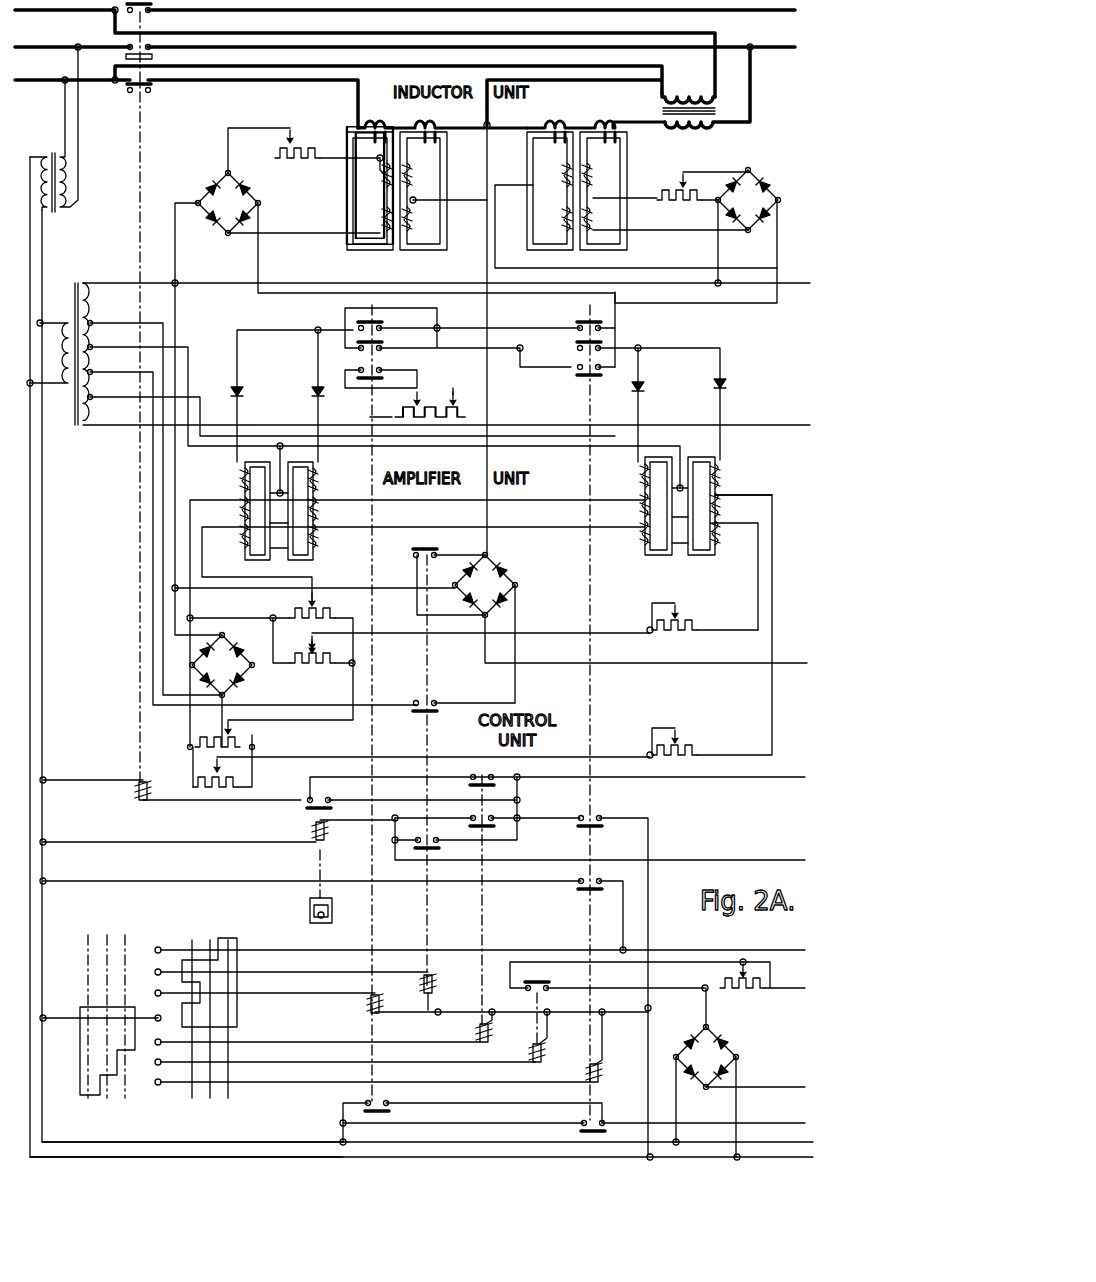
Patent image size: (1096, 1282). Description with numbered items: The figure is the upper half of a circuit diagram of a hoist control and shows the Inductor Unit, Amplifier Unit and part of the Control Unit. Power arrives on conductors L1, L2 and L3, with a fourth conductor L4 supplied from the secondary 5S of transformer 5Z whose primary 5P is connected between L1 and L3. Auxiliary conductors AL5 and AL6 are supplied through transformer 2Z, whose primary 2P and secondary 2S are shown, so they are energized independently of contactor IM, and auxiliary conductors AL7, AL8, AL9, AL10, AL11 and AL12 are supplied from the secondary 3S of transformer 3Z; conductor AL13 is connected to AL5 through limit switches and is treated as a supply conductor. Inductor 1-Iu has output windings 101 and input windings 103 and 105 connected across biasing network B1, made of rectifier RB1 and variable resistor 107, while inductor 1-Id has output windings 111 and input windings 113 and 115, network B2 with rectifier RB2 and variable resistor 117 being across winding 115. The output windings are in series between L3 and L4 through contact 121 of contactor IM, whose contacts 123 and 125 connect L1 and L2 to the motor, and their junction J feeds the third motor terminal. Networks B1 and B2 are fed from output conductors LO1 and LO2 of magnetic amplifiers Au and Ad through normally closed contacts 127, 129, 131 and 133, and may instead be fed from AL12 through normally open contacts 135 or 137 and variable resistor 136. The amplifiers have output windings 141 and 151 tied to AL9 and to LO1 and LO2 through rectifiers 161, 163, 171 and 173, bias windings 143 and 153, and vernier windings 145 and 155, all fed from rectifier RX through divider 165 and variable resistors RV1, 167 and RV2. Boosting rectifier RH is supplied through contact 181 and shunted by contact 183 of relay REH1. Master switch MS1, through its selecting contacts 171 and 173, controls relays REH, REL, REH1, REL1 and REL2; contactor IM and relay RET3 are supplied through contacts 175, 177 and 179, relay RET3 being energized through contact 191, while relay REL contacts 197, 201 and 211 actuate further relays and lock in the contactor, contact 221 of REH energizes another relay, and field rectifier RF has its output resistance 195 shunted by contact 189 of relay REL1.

The conductor L1 is at (51, 12).
The conductor L2 is at (51, 49).
The conductor L3 is at (51, 82).
The contact of contactor 1M 123 is at (152, 14).
The contact of contactor 1M 125 is at (152, 51).
The contact of contactor 1M 121 is at (152, 88).
The secondary of transformer 2Z 2S is at (40, 155).
The primary of transformer 2Z 2P is at (72, 175).
The transformer 2Z is at (60, 212).
The transformer 3Z is at (72, 285).
The secondary of transformer 3Z 3S is at (90, 297).
The conductor AL5 is at (46, 584).
The conductor AL6 is at (46, 608).
The auxiliary conductor AL7 is at (193, 286).
The auxiliary conductor AL8 is at (163, 320).
The auxiliary conductor AL9 is at (163, 346).
The auxiliary conductor AL10 is at (152, 480).
The auxiliary conductor AL11 is at (208, 398).
The auxiliary conductor AL12 is at (126, 426).
The conductor AL13 is at (676, 777).
The rectifier RB1 is at (230, 195).
The rectifier RB2 is at (745, 187).
The variable resistor 107 is at (292, 148).
The variable resistor 117 is at (677, 191).
The biasing network B1 is at (340, 186).
The biasing network B2 is at (676, 209).
The inductor 1-Iu is at (372, 250).
The inductor 1-Id is at (627, 250).
The output windings 101 is at (420, 129).
The input winding 103 is at (387, 180).
The input winding 105 is at (387, 224).
The output windings 111 is at (602, 119).
The input winding 113 is at (567, 179).
The input winding 115 is at (567, 211).
The junction J is at (489, 338).
The conductor L4 is at (621, 104).
The primary of transformer 5Z 5P is at (665, 94).
The secondary of transformer 5Z 5S is at (700, 125).
The transformer 5Z is at (714, 106).
The output conductor LO1 is at (314, 330).
The output conductor LO2 is at (668, 347).
The normally closed contact 129 is at (378, 324).
The normally closed contact of relay REH 133 is at (378, 344).
The normally open contact of relay REH 137 is at (378, 366).
The normally closed contact of relay REL 127 is at (580, 324).
The normally closed contact 131 is at (580, 344).
The normally open contact of relay REL 135 is at (580, 370).
The variable resistor 136 is at (428, 405).
The rectifier 161 is at (314, 393).
The rectifier 163 is at (239, 394).
The rectifier 171 is at (715, 386).
The rectifier 173 is at (643, 391).
The magnetic amplifier Au is at (293, 510).
The magnetic amplifier Ad is at (680, 517).
The output windings 141 is at (245, 483).
The bias windings 143 is at (245, 510).
The vernier windings 145 is at (245, 537).
The output windings 151 is at (644, 483).
The bias windings 153 is at (644, 510).
The vernier windings 155 is at (644, 537).
The variable resistor 167 is at (695, 622).
The normally closed contact of relay REH1 183 is at (428, 553).
The rectifier RH is at (491, 628).
The normally open contact of relay REH1 181 is at (433, 705).
The variable resistor RV2 is at (287, 609).
The variable resistor RV1 is at (291, 668).
The rectifier RX is at (222, 690).
The voltage divider 165 is at (244, 743).
The contactor IM is at (138, 793).
The contact of relay RET3 179 is at (306, 804).
The relay RET3 is at (313, 849).
The contact of relay REL2 177 is at (471, 780).
The contact of relay REL2 191 is at (473, 817).
The contact of relay REH1 175 is at (436, 844).
The contact of relay REL 211 is at (598, 817).
The contact of relay REL 201 is at (580, 885).
The master switch MS1 is at (442, 1007).
The relay REH1 is at (432, 978).
The relay REH is at (368, 999).
The normally closed contact of relay REL1 189 is at (543, 988).
The resistance 195 is at (741, 990).
The relay REL2 is at (478, 1032).
The relay REL1 is at (544, 1048).
The relay REL is at (600, 1066).
The rectifier RF is at (739, 1072).
The normally open contact of relay REH 221 is at (386, 1104).
The contact of relay REL 197 is at (582, 1122).